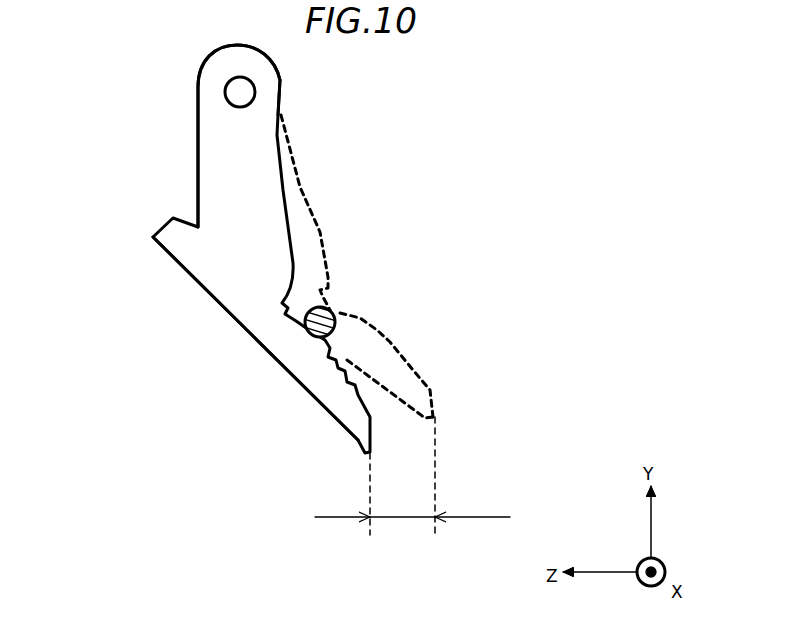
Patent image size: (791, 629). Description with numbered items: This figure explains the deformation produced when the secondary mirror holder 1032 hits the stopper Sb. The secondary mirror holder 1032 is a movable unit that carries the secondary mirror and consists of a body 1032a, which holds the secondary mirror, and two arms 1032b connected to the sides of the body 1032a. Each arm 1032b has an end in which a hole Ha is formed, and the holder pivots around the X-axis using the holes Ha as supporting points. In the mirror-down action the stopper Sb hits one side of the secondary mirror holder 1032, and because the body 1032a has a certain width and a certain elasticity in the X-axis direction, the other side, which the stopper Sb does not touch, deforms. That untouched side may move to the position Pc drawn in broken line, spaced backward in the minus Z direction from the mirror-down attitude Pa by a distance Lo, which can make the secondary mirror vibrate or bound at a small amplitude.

The secondary mirror holder 1032 is at (173, 326).
The body 1032a is at (298, 383).
The arm 1032b is at (198, 112).
The hole Ha is at (258, 90).
The mirror-down attitude Pa is at (140, 208).
The deformed position Pc is at (330, 232).
The stopper Sb is at (330, 310).
The distance Lo is at (412, 476).